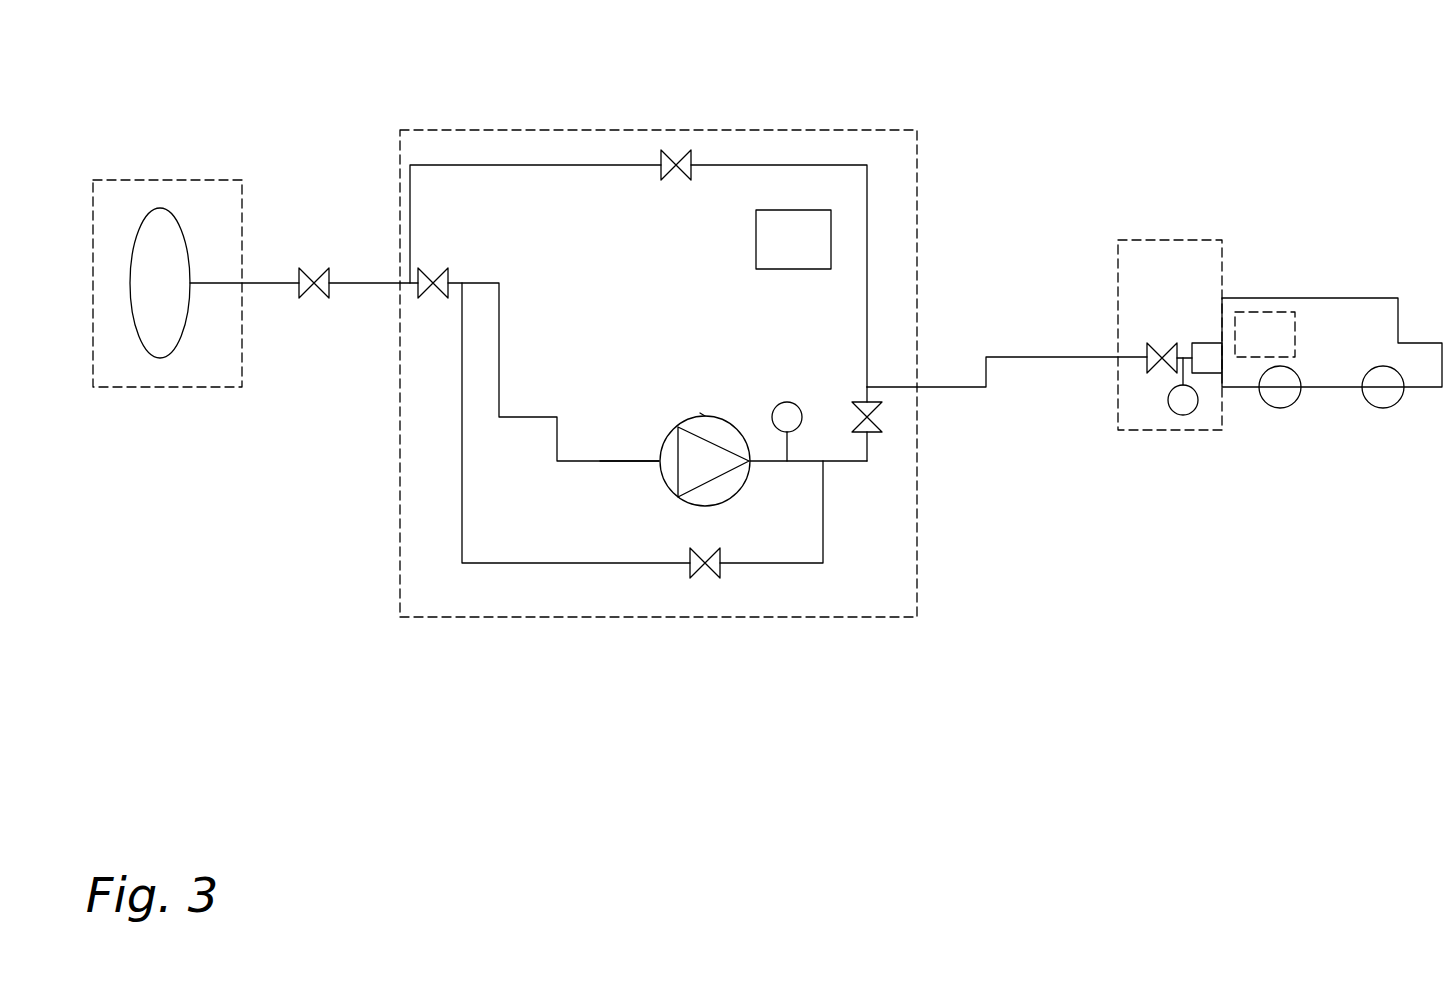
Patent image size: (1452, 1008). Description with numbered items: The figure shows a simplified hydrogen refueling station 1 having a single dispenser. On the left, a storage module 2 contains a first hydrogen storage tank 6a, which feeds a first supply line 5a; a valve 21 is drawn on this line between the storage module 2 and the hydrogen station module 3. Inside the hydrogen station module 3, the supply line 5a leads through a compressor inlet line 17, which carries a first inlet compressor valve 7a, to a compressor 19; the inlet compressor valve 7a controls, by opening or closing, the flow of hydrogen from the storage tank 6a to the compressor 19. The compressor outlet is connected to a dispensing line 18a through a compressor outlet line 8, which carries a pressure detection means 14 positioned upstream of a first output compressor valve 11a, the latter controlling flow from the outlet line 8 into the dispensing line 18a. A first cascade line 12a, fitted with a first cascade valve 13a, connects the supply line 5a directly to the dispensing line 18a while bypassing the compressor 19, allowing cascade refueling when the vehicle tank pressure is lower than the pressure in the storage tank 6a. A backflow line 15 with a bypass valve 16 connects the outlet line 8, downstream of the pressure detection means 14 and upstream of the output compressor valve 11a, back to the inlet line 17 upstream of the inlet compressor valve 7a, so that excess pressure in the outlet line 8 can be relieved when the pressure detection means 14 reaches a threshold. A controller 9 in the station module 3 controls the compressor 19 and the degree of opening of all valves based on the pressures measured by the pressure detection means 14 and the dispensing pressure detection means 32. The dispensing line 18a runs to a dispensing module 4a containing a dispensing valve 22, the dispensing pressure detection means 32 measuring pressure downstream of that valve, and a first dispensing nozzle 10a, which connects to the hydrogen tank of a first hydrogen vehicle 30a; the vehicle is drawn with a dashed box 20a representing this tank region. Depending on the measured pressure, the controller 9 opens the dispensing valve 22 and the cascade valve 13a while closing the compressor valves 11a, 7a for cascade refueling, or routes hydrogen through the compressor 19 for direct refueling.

The hydrogen refueling station 1 is at (228, 72).
The storage module 2 is at (170, 180).
The first hydrogen storage tank 6a is at (160, 283).
The shut-off valve 21 is at (314, 268).
The hydrogen station module 3 is at (553, 617).
The first inlet compressor valve 7a is at (436, 268).
The first supply line 5a is at (458, 282).
The first cascade line 12a is at (838, 165).
The first cascade valve 13a is at (676, 160).
The controller 9 is at (793, 239).
The compressor inlet line 17 is at (638, 461).
The compressor 19 is at (703, 415).
The compressor outlet line 8 is at (762, 468).
The pressure detection means 14 is at (787, 402).
The first output compressor valve 11a is at (862, 402).
The backflow line 15 is at (795, 565).
The bypass valve 16 is at (702, 580).
The dispensing line 18a is at (1033, 355).
The dispensing module 4a is at (1122, 240).
The dispensing valve 22 is at (1165, 345).
The first dispensing nozzle 10a is at (1207, 343).
The dispensing pressure detection means 32 is at (1187, 415).
The vehicle 20a is at (1272, 333).
The first hydrogen vehicle 30a is at (1366, 337).